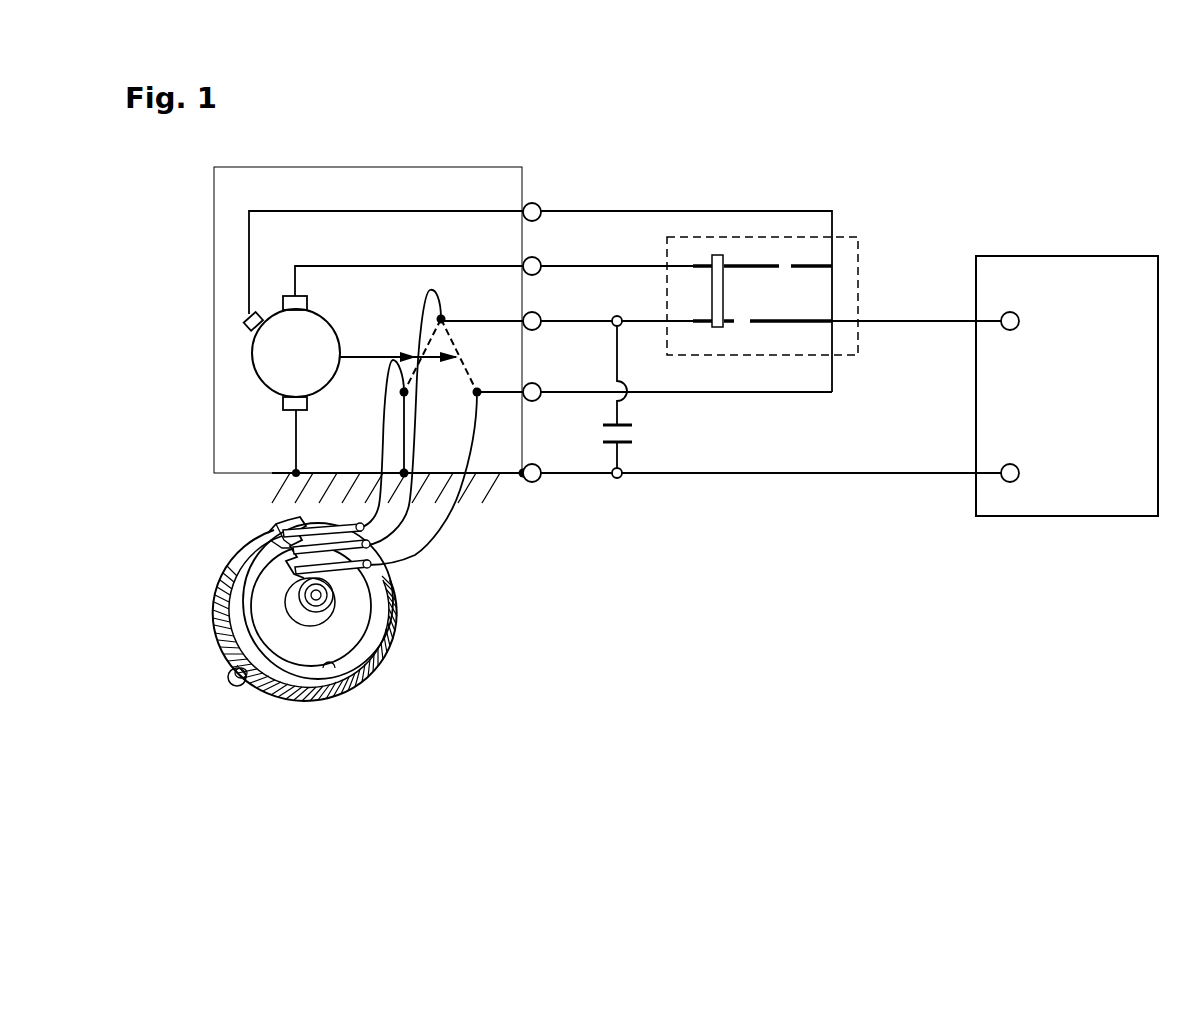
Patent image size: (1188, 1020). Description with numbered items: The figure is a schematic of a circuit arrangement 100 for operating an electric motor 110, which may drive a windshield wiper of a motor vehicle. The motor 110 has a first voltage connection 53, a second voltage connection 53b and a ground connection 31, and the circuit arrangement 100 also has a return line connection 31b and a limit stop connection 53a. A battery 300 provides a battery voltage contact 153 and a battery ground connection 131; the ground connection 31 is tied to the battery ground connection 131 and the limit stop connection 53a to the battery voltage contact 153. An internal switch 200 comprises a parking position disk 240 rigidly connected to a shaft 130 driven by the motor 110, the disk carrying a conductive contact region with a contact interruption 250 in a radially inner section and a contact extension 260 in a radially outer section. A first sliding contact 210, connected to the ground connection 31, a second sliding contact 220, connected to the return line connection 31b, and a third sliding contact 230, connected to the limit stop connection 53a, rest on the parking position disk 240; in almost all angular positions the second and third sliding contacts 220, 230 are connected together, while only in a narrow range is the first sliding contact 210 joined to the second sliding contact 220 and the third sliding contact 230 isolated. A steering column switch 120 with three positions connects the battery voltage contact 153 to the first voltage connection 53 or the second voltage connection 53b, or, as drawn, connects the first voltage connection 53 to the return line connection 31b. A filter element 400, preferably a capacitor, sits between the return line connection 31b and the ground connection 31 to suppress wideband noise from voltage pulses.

The circuit arrangement 100 is at (682, 184).
The electric motor 110 is at (263, 347).
The steering column switch 120 is at (858, 253).
The shaft 130 is at (230, 681).
The battery ground connection 131 is at (1019, 473).
The battery voltage contact 153 is at (1019, 321).
The internal switch 200 is at (332, 608).
The first sliding contact 210 is at (283, 515).
The second sliding contact 220 is at (370, 547).
The third sliding contact 230 is at (354, 568).
The parking position disk 240 is at (343, 645).
The contact interruption 250 is at (248, 568).
The contact extension 260 is at (247, 538).
The battery 300 is at (1133, 278).
The ground connection 31 is at (538, 466).
The return line connection 31b is at (538, 314).
The filter element 400 is at (644, 431).
The first voltage connection 53 is at (538, 259).
The limit stop connection 53a is at (538, 385).
The second voltage connection 53b is at (538, 205).